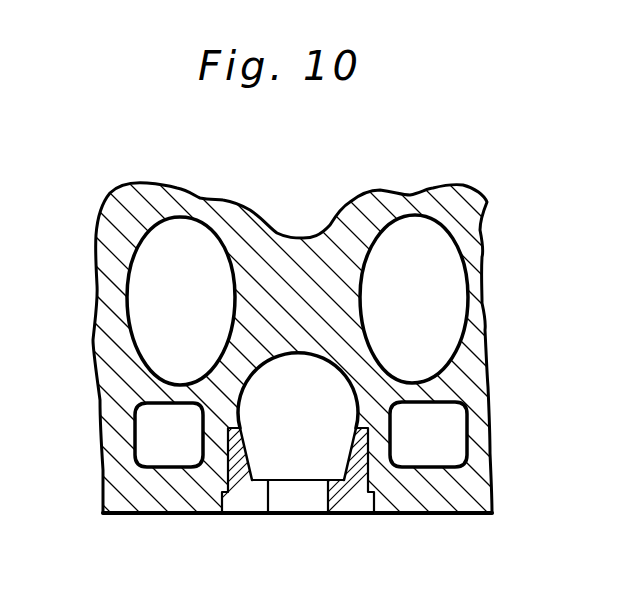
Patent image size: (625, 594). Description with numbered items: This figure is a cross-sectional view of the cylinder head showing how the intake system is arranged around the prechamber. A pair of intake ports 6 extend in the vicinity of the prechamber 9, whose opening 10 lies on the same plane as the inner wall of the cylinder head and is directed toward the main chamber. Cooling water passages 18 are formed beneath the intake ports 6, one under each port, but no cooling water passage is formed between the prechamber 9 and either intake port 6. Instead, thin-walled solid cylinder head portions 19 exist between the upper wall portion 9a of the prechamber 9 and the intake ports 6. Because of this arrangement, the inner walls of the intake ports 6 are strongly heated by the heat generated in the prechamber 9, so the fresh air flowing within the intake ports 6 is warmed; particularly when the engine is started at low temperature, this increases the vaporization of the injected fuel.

The intake ports 6 is at (155, 257).
The prechamber 9 is at (262, 453).
The upper wall portion of the prechamber 9a is at (262, 390).
The opening of the prechamber 10 is at (306, 492).
The cooling water passages 18 is at (170, 448).
The thin-walled solid cylinder head portions 19 is at (228, 375).